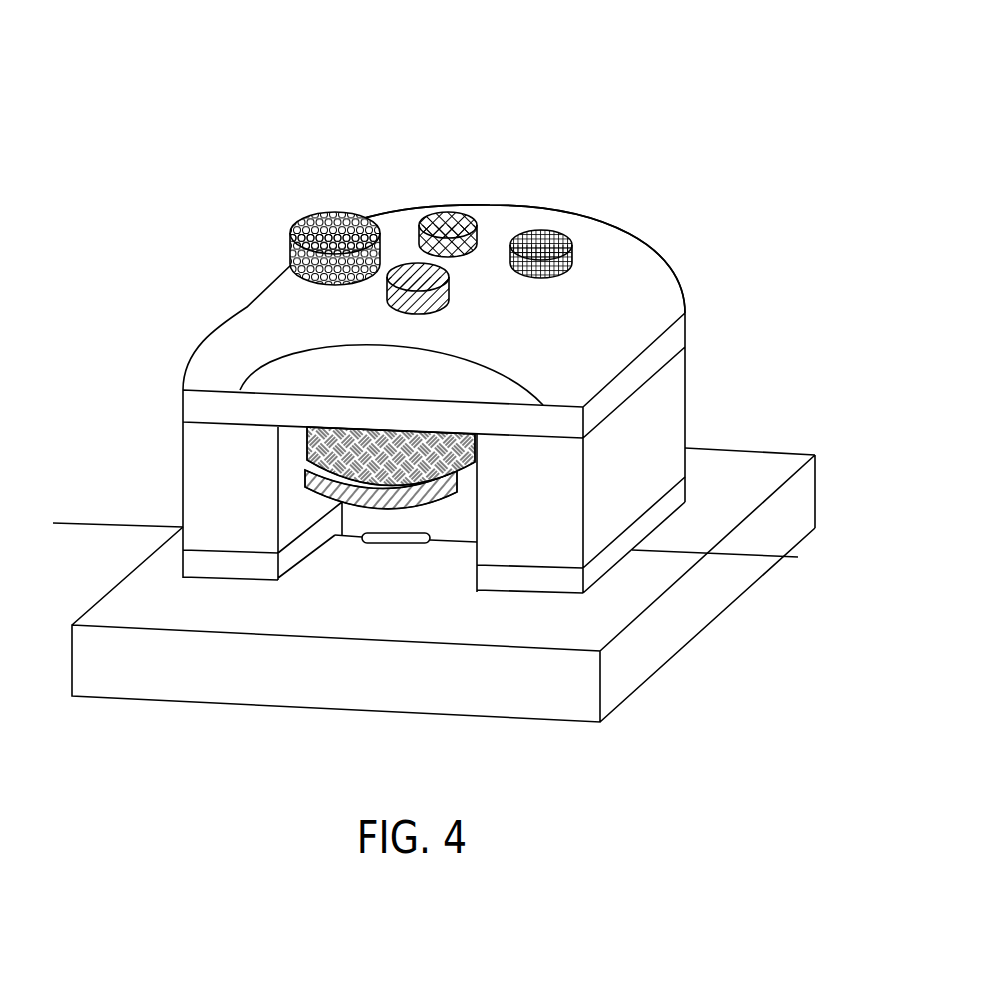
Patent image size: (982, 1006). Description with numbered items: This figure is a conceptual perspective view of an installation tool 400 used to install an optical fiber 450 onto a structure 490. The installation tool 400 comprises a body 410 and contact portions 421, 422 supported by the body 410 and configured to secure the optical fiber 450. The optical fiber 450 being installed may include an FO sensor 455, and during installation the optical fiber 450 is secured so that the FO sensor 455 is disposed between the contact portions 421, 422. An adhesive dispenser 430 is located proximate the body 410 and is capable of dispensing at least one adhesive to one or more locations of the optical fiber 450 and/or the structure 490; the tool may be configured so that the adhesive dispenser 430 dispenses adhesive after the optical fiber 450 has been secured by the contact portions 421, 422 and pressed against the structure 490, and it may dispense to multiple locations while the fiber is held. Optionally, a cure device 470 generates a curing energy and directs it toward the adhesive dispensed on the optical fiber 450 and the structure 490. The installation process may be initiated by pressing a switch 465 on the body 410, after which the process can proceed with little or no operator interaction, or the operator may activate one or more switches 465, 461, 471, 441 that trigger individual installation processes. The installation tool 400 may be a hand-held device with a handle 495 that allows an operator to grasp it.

The installation tool 400 is at (452, 100).
The body 410 is at (253, 323).
The contact portion 421 is at (197, 567).
The contact portion 422 is at (560, 591).
The adhesive dispenser 430 is at (307, 478).
The switch 441 is at (418, 267).
The optical fiber 450 is at (747, 554).
The FO sensor 455 is at (393, 543).
The switch 461 is at (448, 222).
The switch 465 is at (323, 232).
The cure device 470 is at (309, 445).
The switch 471 is at (540, 240).
The structure 490 is at (540, 722).
The handle 495 is at (618, 297).